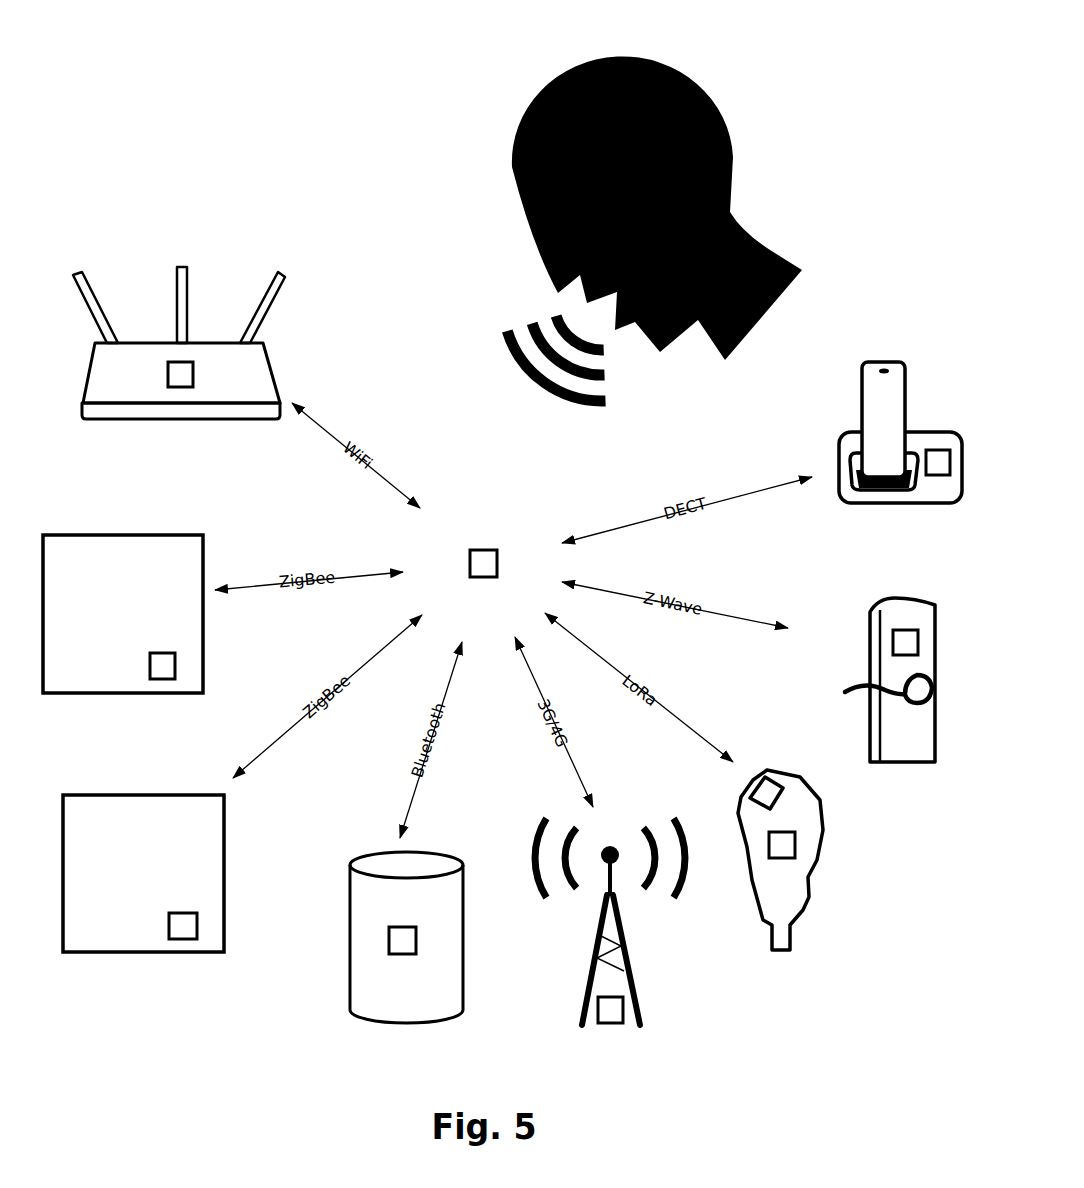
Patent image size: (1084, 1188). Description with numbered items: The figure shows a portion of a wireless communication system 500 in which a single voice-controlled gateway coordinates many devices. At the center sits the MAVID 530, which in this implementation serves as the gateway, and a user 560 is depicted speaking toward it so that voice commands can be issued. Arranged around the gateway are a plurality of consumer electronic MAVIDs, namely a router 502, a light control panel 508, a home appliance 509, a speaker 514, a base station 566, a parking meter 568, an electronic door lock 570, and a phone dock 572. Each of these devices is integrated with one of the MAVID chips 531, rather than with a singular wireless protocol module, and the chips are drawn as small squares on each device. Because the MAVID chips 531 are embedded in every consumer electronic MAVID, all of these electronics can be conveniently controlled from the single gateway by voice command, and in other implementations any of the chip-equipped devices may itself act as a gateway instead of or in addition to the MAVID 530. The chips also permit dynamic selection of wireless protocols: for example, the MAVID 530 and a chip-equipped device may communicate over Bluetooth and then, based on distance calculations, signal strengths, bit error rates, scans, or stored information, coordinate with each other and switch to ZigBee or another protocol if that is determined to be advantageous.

The wireless communication system 500 is at (318, 78).
The user 560 is at (674, 70).
The router 502 is at (74, 276).
The MAVID chips 531 is at (194, 363).
The light control panel 508 is at (124, 535).
The home appliance 509 is at (144, 795).
The speaker 514 is at (350, 870).
The MAVID 530 is at (480, 550).
The base station 566 is at (598, 936).
The parking meter 568 is at (778, 770).
The electronic door lock 570 is at (870, 624).
The phone dock 572 is at (898, 362).